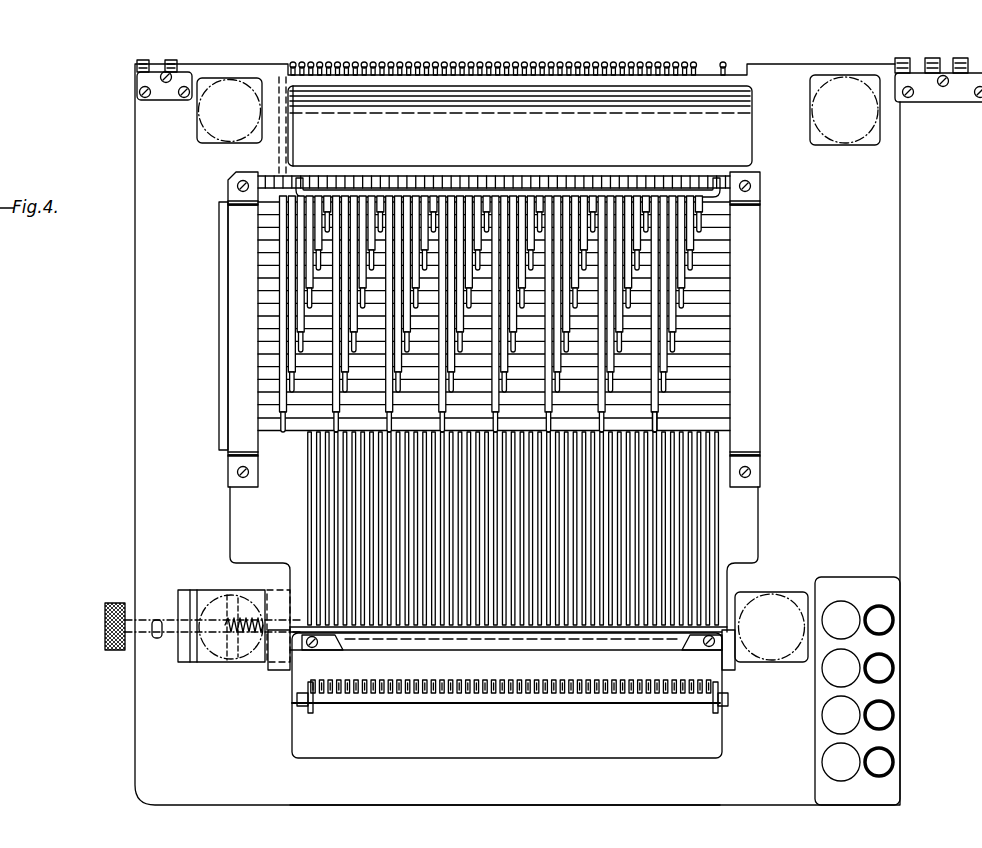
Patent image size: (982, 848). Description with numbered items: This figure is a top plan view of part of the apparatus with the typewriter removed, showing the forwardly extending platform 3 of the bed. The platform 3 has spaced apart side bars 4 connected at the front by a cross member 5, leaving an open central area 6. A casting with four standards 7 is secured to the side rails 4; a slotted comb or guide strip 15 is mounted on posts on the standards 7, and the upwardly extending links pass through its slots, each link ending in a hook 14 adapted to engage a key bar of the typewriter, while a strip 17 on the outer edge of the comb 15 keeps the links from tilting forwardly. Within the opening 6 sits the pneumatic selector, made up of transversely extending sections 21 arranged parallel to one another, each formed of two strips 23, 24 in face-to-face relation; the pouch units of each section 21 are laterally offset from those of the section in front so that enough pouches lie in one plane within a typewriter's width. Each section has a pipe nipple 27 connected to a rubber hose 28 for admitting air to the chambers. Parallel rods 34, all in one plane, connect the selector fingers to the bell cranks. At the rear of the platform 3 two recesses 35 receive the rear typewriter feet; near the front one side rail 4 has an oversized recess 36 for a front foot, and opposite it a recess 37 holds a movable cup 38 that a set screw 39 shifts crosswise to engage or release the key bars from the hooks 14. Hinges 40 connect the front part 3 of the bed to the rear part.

The platform 3 is at (905, 407).
The side bars 4 is at (522, 559).
The cross member 5 is at (505, 787).
The open central area 6 is at (507, 695).
The standards 7 is at (292, 672).
The hook 14 is at (476, 690).
The slotted comb 15 is at (511, 676).
The strip 17 is at (405, 702).
The sections 21 is at (310, 382).
The strip 23 is at (735, 431).
The strip 24 is at (735, 418).
The pipe nipple 27 is at (656, 425).
The rubber hose 28 is at (636, 67).
The rods 34 is at (705, 527).
The recesses 35 is at (214, 141).
The recess 36 is at (802, 655).
The recess 37 is at (183, 601).
The movable cup 38 is at (207, 655).
The set screw 39 is at (172, 638).
The hinges 40 is at (168, 63).